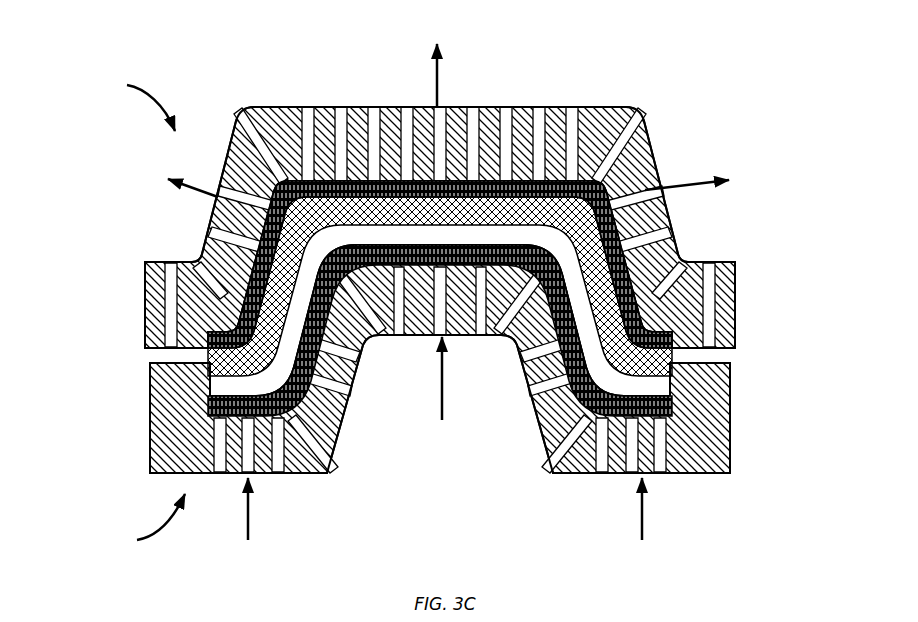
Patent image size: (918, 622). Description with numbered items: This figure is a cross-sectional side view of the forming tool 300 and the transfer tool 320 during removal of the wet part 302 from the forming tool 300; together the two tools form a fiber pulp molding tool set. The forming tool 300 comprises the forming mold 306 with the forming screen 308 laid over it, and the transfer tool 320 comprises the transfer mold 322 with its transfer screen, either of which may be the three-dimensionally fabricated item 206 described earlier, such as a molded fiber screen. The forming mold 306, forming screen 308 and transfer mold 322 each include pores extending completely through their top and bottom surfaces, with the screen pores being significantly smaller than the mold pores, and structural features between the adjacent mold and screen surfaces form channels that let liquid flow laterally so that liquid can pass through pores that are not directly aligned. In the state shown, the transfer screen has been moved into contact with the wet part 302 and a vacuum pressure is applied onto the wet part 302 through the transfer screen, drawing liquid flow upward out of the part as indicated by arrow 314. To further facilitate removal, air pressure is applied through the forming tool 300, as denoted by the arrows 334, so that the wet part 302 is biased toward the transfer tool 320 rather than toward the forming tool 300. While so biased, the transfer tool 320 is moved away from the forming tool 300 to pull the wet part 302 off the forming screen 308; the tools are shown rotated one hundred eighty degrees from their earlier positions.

The transfer tool 320 is at (111, 76).
The wet part 302 is at (348, 192).
The liquid flow 314 is at (437, 80).
The item 206 is at (598, 183).
The transfer mold 322 is at (739, 295).
The forming mold 306 is at (742, 430).
The forming screen 308 is at (648, 414).
The arrows 334 is at (248, 522).
The forming tool 300 is at (121, 536).